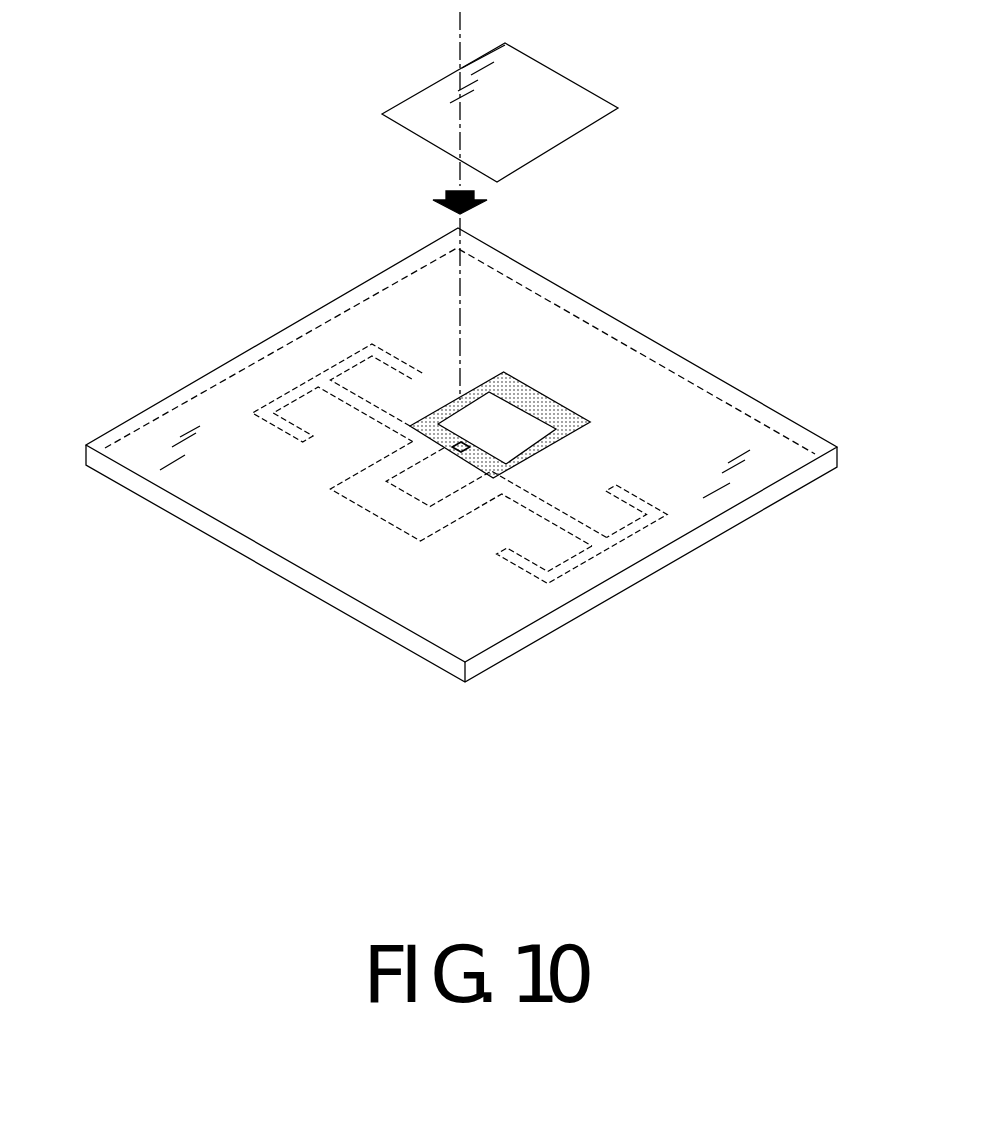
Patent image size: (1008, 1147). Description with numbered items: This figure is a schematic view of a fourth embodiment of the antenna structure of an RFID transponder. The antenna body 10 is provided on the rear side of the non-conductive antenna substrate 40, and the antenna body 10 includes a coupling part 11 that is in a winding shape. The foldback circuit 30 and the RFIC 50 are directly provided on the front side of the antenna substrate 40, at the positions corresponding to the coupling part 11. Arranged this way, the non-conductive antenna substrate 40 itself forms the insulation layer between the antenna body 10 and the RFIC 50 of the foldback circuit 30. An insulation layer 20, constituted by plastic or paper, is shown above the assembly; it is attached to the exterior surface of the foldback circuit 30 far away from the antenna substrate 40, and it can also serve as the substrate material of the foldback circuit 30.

The antenna body 10 is at (418, 521).
The coupling part 11 is at (422, 513).
The insulation layer 20 is at (540, 103).
The foldback circuit 30 is at (538, 398).
The non-conductive antenna substrate 40 is at (672, 390).
The RFIC 50 is at (460, 440).